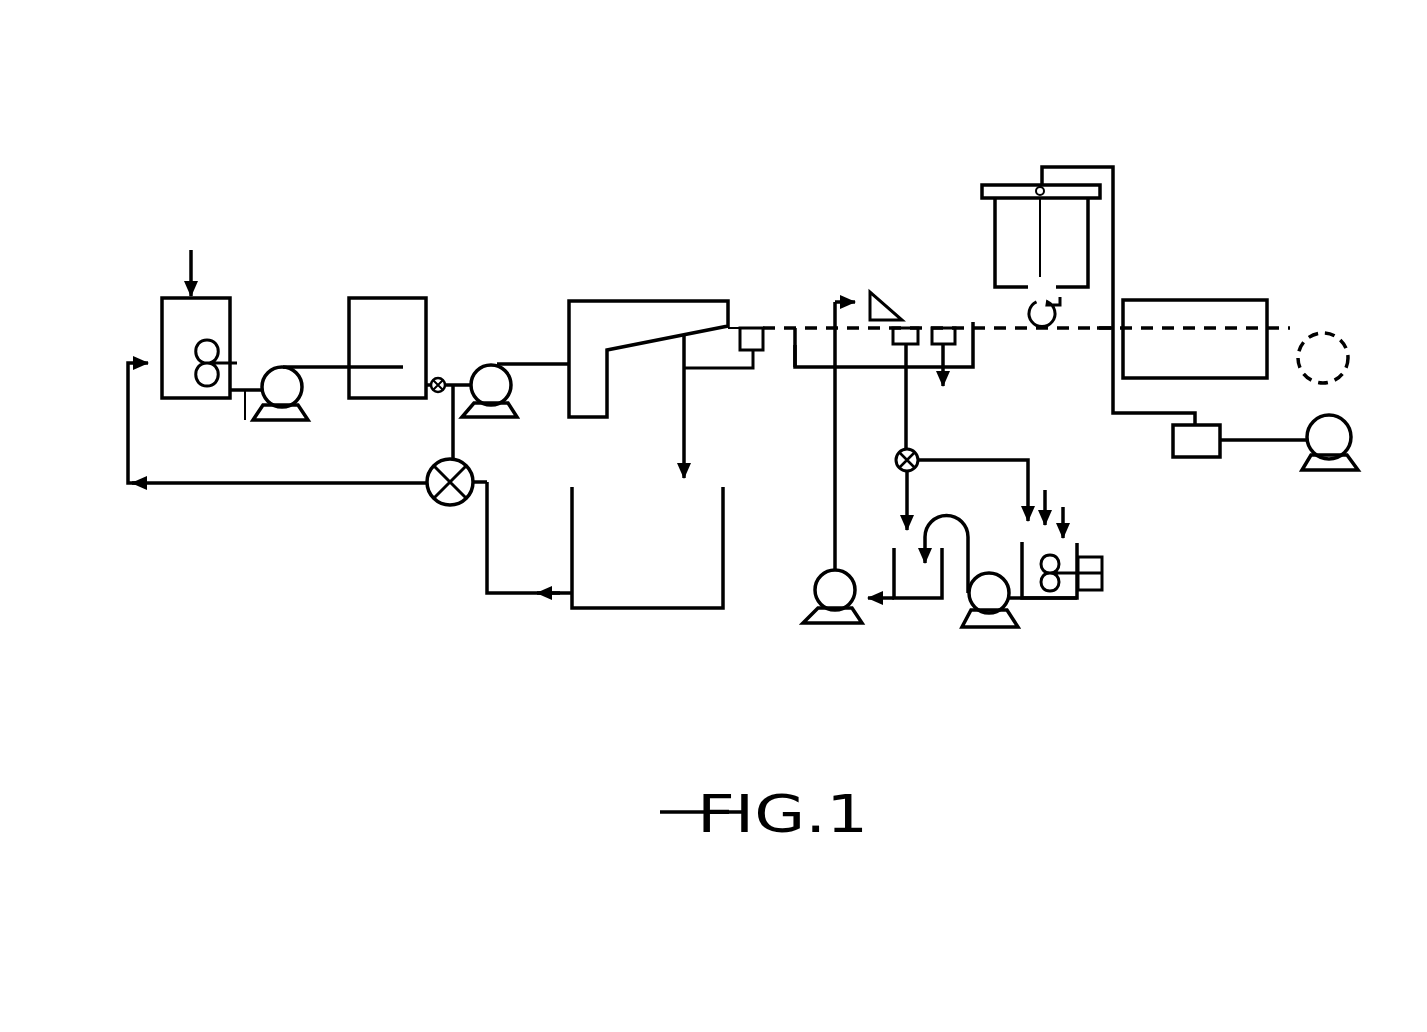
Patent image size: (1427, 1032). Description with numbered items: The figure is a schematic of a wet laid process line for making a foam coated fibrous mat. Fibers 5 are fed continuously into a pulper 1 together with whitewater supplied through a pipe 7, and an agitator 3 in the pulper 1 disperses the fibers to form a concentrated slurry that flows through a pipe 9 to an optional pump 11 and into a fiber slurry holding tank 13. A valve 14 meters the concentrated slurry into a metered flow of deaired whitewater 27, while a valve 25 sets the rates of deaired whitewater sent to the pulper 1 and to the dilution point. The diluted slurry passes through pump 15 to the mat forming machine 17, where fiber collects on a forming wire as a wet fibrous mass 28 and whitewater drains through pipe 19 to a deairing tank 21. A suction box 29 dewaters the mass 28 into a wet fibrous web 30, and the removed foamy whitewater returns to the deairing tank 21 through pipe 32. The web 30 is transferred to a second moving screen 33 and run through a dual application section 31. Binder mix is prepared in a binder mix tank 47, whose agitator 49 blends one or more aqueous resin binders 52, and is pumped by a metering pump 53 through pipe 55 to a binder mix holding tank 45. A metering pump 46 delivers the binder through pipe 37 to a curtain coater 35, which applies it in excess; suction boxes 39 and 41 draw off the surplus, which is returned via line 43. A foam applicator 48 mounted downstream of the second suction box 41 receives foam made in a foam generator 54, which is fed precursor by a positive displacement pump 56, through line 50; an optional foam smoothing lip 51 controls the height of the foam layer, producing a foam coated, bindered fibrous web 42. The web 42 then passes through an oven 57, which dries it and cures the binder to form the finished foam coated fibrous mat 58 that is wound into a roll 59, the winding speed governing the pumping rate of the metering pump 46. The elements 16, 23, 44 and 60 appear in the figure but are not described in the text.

The pulper 1 is at (212, 321).
The agitator 3 is at (218, 350).
The fibers 5 is at (203, 266).
The pipe 7 is at (126, 397).
The pipe 9 is at (246, 421).
The pump 11 is at (299, 395).
The fiber slurry holding tank 13 is at (410, 319).
The valve 14 is at (445, 376).
The pump 15 is at (487, 370).
The feed line 16 is at (556, 362).
The mat forming machine 17 is at (603, 312).
The pipe 19 is at (686, 403).
The deairing tank 21 is at (705, 555).
The recycle line 23 is at (492, 595).
The valve 25 is at (470, 472).
The deaired whitewater 27 is at (453, 443).
The wet fibrous mass 28 is at (737, 323).
The suction box 29 is at (757, 331).
The wet fibrous web 30 is at (783, 326).
The dual application section 31 is at (920, 230).
The pipe 32 is at (716, 370).
The second moving screen 33 is at (810, 353).
The curtain coater 35 is at (888, 298).
The pipe 37 is at (838, 431).
The first suction box 39 is at (908, 333).
The second suction box 41 is at (943, 334).
The foam coated, bindered, fibrous web 42 is at (973, 326).
The line 43 is at (920, 450).
The valve 44 is at (895, 458).
The binder mix holding tank 45 is at (907, 565).
The metering pump 46 is at (806, 598).
The binder mix tank 47 is at (1035, 555).
The foam applicator 48 is at (1067, 268).
The agitator 49 is at (1040, 600).
The line 50 is at (1155, 418).
The foam smoothing lip 51 is at (1056, 498).
The aqueous resin binders 52 is at (1070, 512).
The metering pump 53 is at (965, 605).
The foam generator 54 is at (1222, 425).
The pipe 55 is at (940, 530).
The positive displacement pump 56 is at (1351, 432).
The oven 57 is at (1205, 318).
The foam coated fibrous mat 58 is at (1290, 328).
The roll 59 is at (1330, 345).
The level sensor 60 is at (1003, 185).